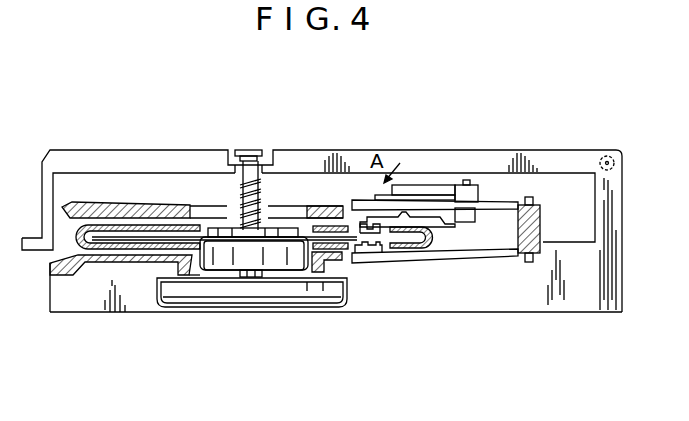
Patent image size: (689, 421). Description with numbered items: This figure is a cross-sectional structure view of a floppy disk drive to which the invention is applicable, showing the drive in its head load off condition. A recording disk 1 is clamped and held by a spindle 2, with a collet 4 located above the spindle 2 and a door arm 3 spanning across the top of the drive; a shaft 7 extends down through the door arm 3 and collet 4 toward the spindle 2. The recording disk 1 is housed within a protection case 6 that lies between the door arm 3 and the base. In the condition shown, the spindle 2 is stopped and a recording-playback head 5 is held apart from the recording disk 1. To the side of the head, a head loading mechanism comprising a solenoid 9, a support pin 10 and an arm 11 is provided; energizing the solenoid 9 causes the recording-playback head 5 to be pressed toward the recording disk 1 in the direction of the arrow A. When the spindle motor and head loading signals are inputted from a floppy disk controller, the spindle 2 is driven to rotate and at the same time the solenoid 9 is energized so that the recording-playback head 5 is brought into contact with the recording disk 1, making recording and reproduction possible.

The recording disk 1 is at (131, 229).
The spindle 2 is at (278, 263).
The door arm 3 is at (140, 165).
The collet 4 is at (278, 231).
The recording-playback head 5 is at (384, 226).
The protection case 6 is at (103, 247).
The shaft 7 is at (247, 152).
The solenoid 9 is at (478, 190).
The support pin 10 is at (417, 186).
The arm 11 is at (407, 193).